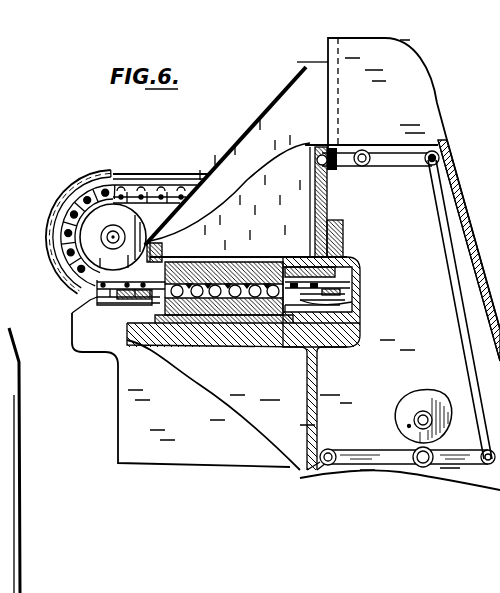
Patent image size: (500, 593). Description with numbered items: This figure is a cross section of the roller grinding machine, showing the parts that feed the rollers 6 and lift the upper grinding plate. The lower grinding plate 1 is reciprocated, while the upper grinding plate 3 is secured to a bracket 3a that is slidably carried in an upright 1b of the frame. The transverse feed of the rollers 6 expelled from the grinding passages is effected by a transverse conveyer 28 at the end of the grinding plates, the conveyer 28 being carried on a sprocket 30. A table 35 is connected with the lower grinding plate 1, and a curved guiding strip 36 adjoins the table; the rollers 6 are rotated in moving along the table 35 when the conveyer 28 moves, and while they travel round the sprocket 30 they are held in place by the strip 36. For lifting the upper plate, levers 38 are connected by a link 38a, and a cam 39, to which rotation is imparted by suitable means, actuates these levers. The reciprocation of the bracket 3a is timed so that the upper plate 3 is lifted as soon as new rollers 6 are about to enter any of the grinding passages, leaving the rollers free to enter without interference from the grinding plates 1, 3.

The lower grinding plate 1 is at (227, 302).
The upright 1b is at (428, 104).
The upper grinding plate 3 is at (227, 273).
The bracket 3a is at (262, 195).
The rollers 6 is at (253, 296).
The transverse conveyer 28 is at (85, 268).
The sprocket 30 is at (95, 235).
The table 35 is at (128, 298).
The curved guiding strip 36 is at (60, 213).
The lever 38 is at (408, 160).
The link 38a is at (456, 240).
The cam 39 is at (417, 412).